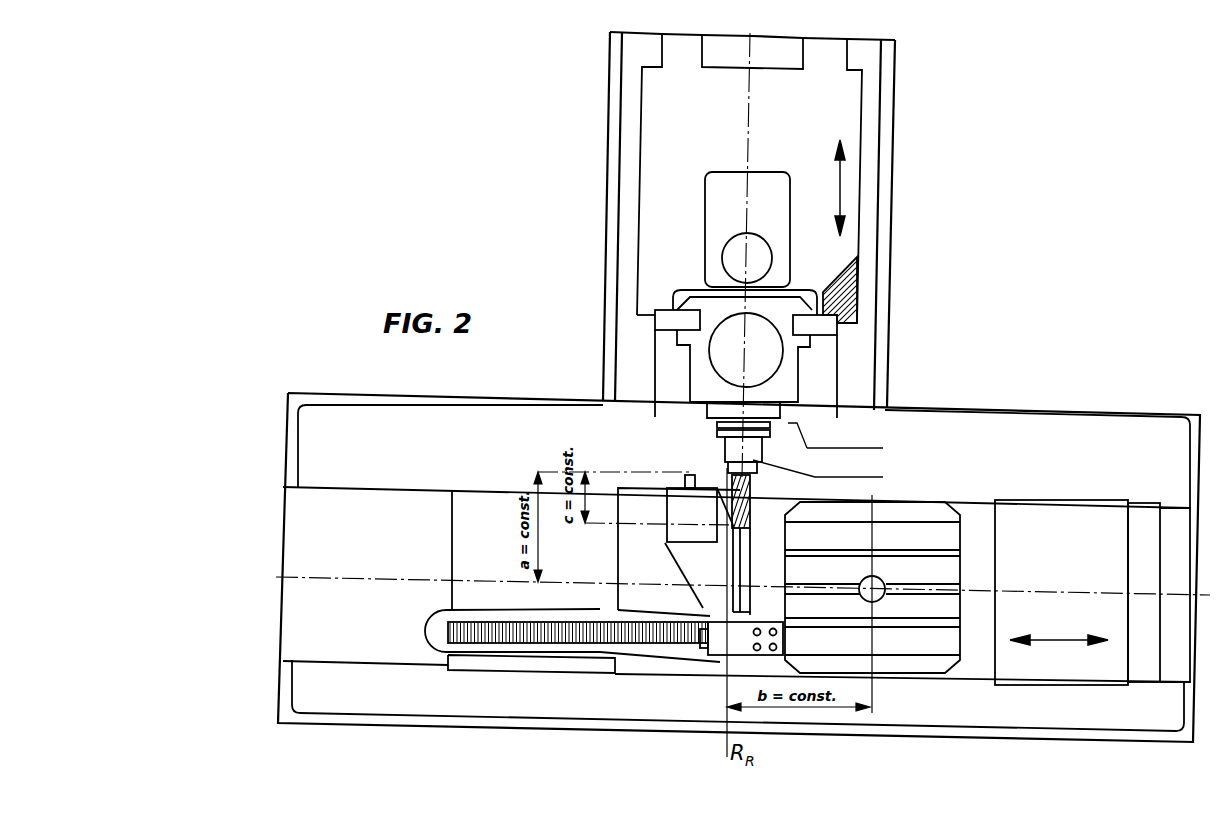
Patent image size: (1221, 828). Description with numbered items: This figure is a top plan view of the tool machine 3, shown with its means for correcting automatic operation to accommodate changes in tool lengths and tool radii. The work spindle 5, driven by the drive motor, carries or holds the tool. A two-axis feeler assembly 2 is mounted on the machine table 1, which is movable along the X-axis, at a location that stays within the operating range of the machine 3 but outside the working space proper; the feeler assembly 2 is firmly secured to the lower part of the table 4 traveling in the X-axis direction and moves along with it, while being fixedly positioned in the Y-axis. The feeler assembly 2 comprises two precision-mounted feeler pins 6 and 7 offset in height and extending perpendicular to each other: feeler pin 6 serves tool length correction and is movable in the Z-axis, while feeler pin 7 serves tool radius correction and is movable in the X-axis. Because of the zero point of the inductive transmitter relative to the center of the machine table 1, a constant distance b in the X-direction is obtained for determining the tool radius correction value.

The machine table 1 is at (1008, 457).
The two-axis feeler assembly 2 is at (713, 591).
The tool machine 3 is at (892, 247).
The table 4 is at (940, 644).
The work spindle 5 is at (737, 452).
The feeler pin 6 is at (690, 468).
The feeler pin 7 is at (717, 540).